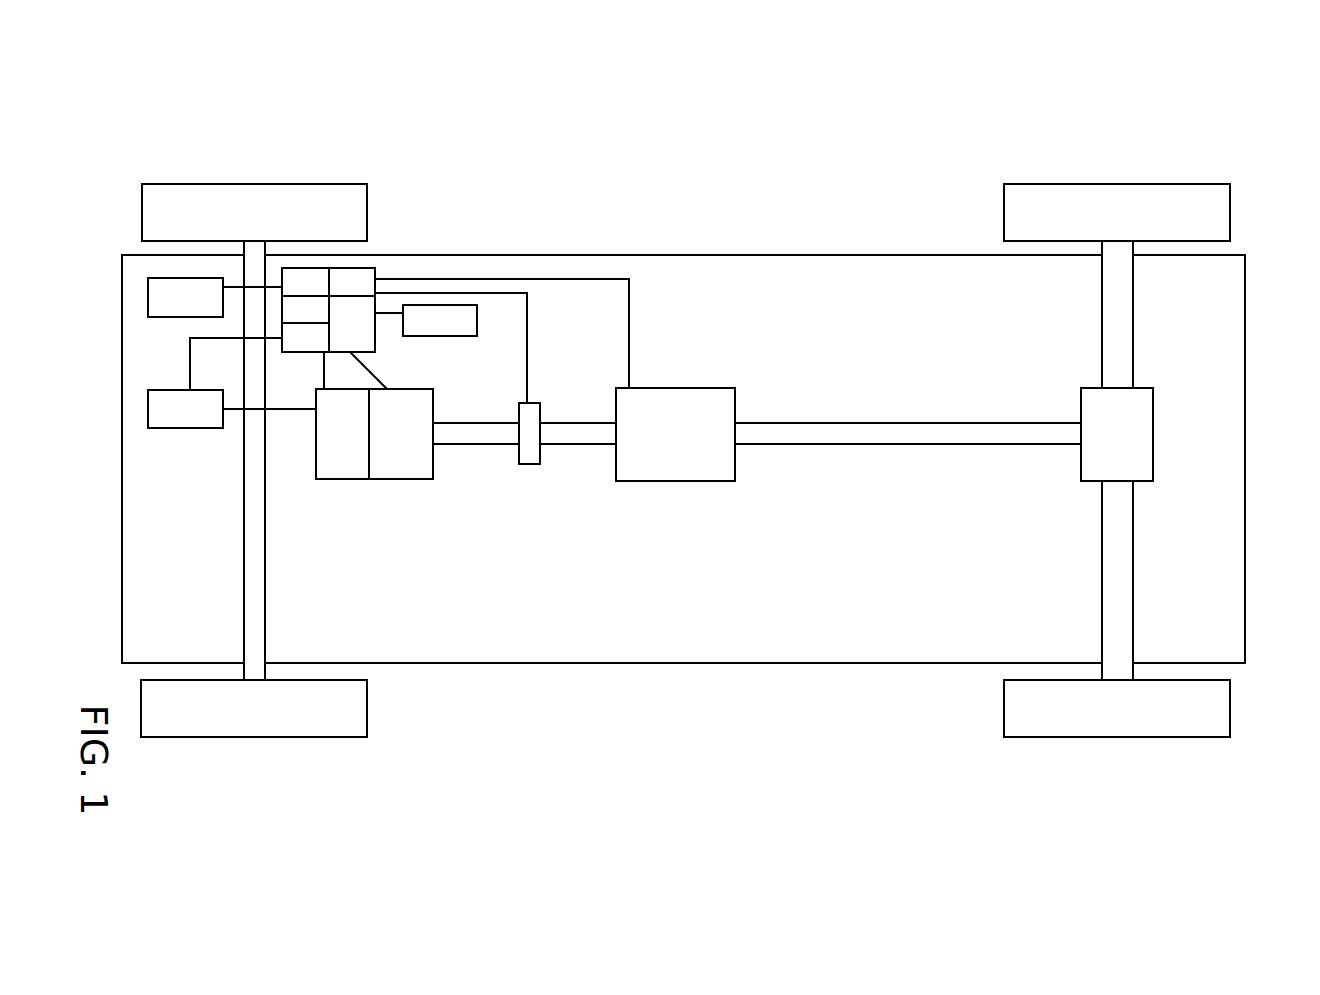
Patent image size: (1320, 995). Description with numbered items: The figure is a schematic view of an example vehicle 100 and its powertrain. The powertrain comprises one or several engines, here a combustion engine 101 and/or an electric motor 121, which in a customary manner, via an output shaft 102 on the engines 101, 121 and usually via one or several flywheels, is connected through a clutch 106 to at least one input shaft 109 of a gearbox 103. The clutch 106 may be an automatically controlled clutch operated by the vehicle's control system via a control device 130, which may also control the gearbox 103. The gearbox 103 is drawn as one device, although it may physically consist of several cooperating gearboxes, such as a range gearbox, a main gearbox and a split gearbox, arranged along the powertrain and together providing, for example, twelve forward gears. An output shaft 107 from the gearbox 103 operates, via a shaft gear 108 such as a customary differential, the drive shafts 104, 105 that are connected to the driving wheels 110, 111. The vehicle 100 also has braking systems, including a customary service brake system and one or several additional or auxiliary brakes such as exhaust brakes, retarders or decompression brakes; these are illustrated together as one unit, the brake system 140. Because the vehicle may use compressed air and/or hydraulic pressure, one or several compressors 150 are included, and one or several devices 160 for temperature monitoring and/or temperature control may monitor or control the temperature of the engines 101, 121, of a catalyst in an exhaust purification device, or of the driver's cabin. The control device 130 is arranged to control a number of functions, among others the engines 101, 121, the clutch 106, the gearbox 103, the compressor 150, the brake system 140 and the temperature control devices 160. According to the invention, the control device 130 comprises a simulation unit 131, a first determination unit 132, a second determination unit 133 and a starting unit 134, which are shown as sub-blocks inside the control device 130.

The vehicle 100 is at (585, 92).
The combustion engine 101 is at (403, 470).
The output shaft 102 is at (457, 428).
The gearbox 103 is at (678, 398).
The drive shaft 104 is at (1120, 312).
The drive shaft 105 is at (1127, 588).
The clutch 106 is at (525, 453).
The output shaft 107 is at (1003, 444).
The shaft gear 108 is at (1147, 428).
The input shaft 109 is at (565, 433).
The driving wheel 110 is at (1225, 710).
The driving wheel 111 is at (1223, 203).
The electric motor 121 is at (350, 470).
The control device 130 is at (455, 335).
The simulation unit 131 is at (305, 337).
The first determination unit 132 is at (305, 309).
The second determination unit 133 is at (305, 282).
The starting unit 134 is at (352, 282).
The brake system 140 is at (426, 320).
The compressor 150 is at (232, 383).
The device for temperature monitoring and/or temperature control 160 is at (215, 297).